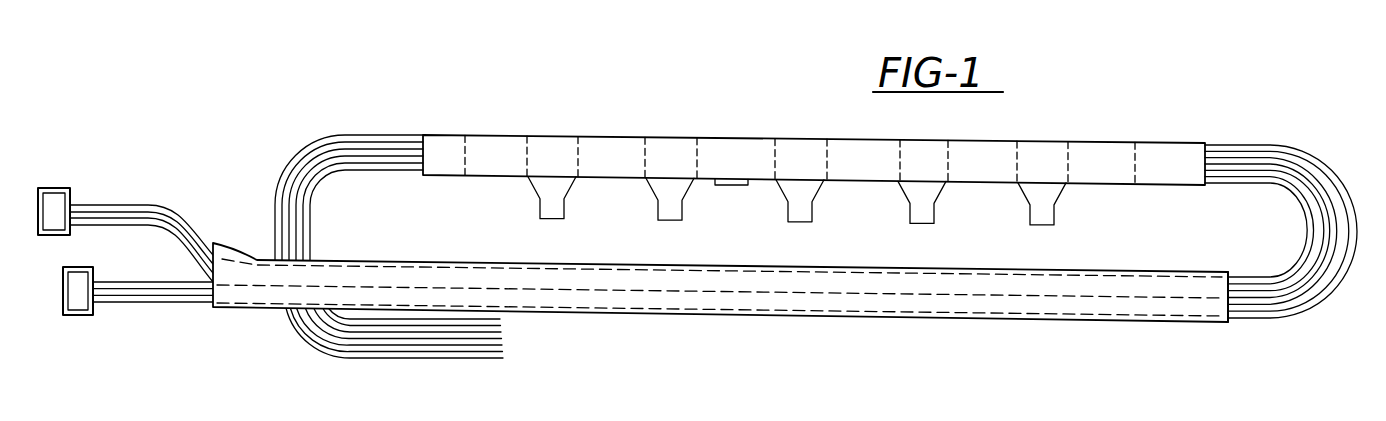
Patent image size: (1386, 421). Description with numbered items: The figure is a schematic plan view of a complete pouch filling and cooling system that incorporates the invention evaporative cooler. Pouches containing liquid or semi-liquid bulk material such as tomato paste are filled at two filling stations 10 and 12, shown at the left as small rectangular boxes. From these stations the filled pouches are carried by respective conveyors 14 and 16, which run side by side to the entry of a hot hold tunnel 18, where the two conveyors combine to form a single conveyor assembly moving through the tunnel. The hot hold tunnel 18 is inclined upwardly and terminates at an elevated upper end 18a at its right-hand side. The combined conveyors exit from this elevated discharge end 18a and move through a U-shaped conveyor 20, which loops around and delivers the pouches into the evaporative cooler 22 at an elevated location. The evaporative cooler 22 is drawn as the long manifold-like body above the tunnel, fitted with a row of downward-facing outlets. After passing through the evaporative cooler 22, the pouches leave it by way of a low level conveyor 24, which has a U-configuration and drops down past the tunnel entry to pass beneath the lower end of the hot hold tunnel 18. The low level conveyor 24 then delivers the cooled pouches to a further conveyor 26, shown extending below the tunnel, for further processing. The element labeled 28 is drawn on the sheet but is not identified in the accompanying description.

The filling station 10 is at (50, 187).
The filling station 12 is at (78, 317).
The conveyor 14 is at (178, 208).
The conveyor 16 is at (165, 303).
The hot hold tunnel 18 is at (937, 268).
The elevated upper end 18a is at (1222, 272).
The U-shaped conveyor 20 is at (1357, 263).
The evaporative cooler 22 is at (767, 183).
The low level conveyor 24 is at (298, 155).
The further conveyor 26 is at (452, 360).
The manifold 28 is at (620, 133).